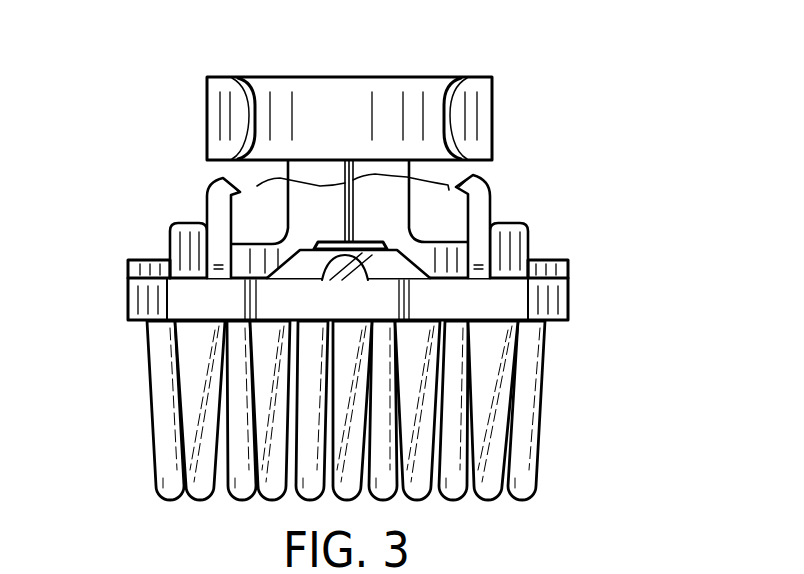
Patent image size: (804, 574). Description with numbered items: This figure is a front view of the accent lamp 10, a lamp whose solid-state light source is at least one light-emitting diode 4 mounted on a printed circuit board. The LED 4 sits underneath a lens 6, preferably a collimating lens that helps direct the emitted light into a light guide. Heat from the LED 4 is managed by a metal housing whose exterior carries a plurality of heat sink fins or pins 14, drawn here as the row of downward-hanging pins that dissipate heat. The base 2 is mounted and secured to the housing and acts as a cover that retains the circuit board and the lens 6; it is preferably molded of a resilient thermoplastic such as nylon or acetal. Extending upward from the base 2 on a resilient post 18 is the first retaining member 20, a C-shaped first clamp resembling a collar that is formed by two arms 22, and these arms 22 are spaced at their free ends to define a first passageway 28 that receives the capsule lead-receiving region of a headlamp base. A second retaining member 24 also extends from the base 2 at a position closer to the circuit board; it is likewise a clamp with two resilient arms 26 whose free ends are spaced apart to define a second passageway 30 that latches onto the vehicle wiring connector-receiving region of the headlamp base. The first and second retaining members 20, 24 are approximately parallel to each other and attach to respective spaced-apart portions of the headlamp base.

The base 2 is at (571, 270).
The light-emitting diode 4 is at (322, 281).
The lens 6 is at (283, 262).
The accent lamp 10 is at (624, 86).
The heat sink fins or pins 14 is at (540, 432).
The resilient post 18 is at (317, 203).
The first retaining member 20 is at (248, 76).
The arms 22 is at (207, 105).
The second retaining member 24 is at (207, 201).
The resilient arms 26 is at (230, 187).
The first passageway 28 is at (252, 65).
The second passageway 30 is at (400, 175).